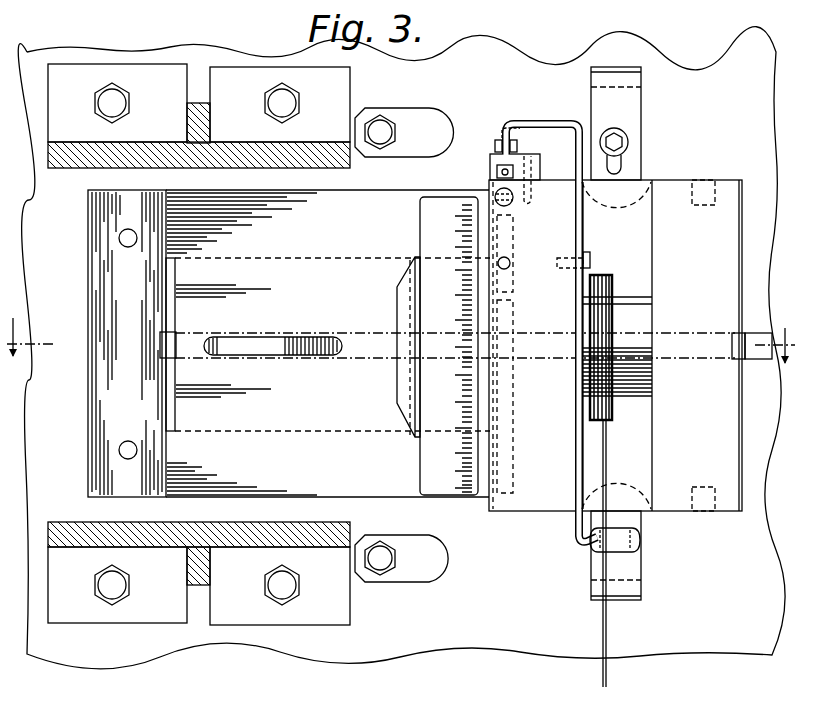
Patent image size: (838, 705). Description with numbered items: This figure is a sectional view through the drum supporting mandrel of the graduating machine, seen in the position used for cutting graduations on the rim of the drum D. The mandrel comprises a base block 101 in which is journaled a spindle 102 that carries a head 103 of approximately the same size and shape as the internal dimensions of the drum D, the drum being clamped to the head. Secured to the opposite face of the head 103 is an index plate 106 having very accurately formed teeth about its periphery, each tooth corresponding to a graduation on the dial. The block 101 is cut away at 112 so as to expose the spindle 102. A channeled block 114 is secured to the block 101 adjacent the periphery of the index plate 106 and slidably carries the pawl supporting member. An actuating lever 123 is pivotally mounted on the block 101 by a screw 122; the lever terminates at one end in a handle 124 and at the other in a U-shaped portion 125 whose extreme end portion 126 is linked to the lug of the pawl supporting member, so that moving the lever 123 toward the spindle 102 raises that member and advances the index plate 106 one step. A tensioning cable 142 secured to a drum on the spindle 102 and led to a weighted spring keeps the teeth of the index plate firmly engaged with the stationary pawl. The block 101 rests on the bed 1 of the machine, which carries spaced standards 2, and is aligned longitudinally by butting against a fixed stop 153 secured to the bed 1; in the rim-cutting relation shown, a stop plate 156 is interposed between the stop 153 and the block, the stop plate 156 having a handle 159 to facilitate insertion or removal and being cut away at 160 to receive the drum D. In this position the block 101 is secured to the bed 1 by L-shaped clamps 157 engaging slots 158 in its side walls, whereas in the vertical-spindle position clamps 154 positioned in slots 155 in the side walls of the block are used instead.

The base or bed 1 is at (535, 650).
The standards 2 is at (86, 168).
The base block 101 is at (540, 503).
The spindle 102 is at (650, 376).
The head 103 is at (632, 277).
The index plate 106 is at (515, 410).
The cut away portion 112 is at (641, 470).
The channeled block 114 is at (490, 160).
The screw 122 is at (590, 258).
The actuating lever 123 is at (585, 228).
The handle 124 is at (633, 543).
The U-shaped portion 125 is at (534, 117).
The end portion 126 is at (510, 134).
The tensioning cable 142 is at (605, 453).
The stationary stop 153 is at (108, 410).
The clamps 154 is at (432, 111).
The slots 155 is at (704, 182).
The stop plate 156 is at (352, 203).
The L-shaped clamps 157 is at (633, 108).
The slots 158 is at (648, 170).
The handle 159 is at (284, 345).
The cut away portion 160 is at (408, 388).
The drum D is at (455, 499).